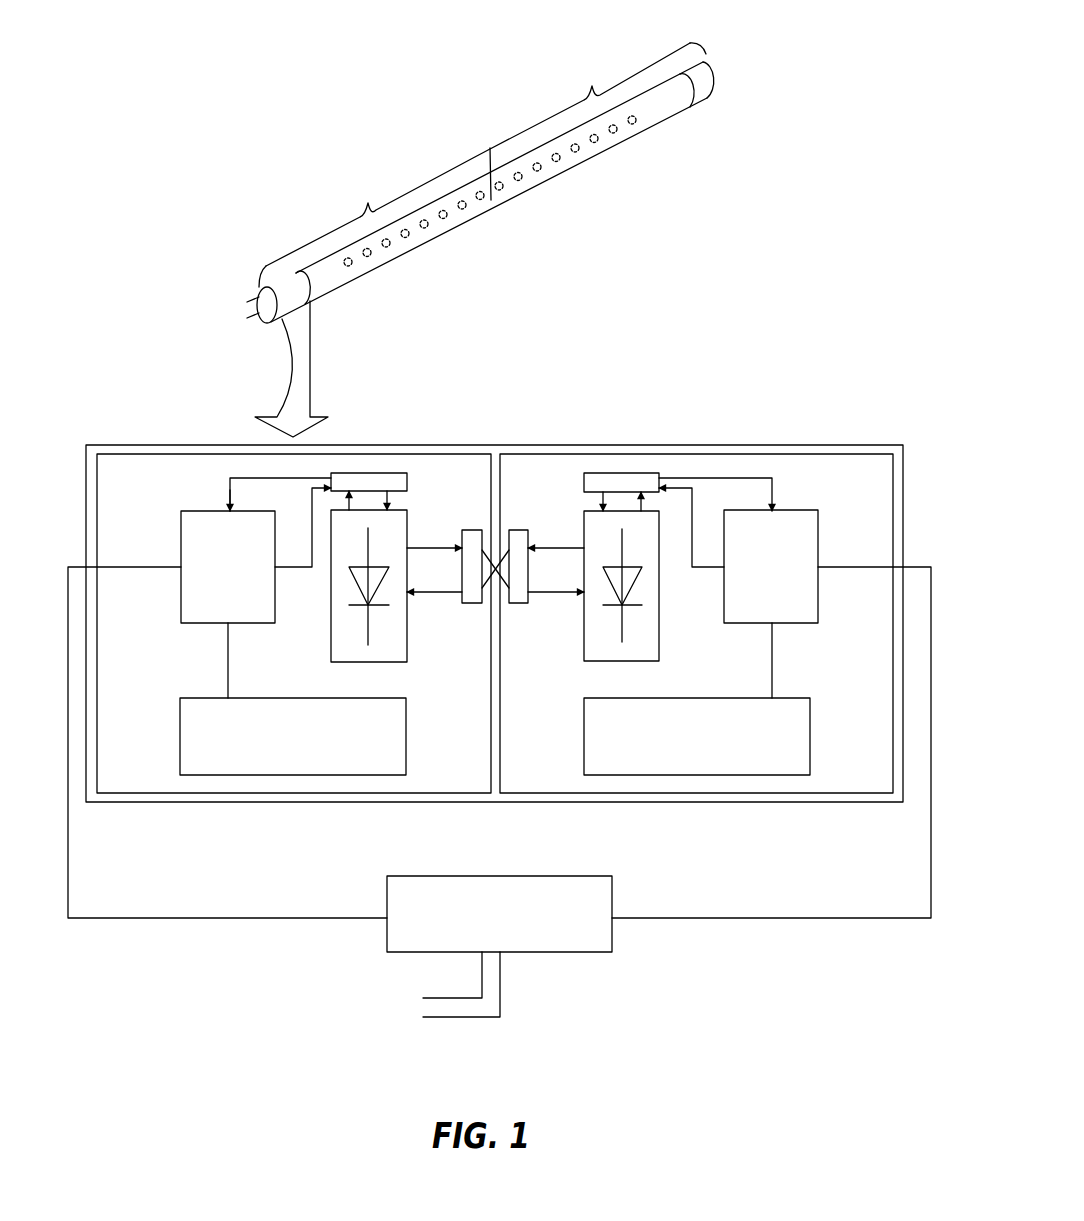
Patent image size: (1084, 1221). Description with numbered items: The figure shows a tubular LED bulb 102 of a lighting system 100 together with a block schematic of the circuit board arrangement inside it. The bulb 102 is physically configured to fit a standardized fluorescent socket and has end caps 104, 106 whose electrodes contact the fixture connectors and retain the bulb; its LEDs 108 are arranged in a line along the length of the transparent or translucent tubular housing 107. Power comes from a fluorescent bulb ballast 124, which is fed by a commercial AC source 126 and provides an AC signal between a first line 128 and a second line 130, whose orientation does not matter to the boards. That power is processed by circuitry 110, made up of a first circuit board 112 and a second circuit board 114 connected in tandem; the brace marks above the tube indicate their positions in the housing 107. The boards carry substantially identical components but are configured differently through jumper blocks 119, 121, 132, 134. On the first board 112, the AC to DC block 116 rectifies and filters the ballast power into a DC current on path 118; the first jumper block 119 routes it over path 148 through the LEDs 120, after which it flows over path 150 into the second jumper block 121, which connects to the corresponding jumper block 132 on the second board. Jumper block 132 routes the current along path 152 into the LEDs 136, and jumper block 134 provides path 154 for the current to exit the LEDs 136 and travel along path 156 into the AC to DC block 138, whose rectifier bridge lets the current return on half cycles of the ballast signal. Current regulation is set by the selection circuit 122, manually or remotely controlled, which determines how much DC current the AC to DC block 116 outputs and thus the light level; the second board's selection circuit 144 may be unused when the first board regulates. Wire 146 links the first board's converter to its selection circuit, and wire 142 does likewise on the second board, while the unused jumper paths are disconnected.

The lighting system 100 is at (298, 20).
The tubular LED bulb 102 is at (428, 246).
The end cap 104 is at (281, 332).
The end cap 106 is at (692, 107).
The tubular housing 107 is at (634, 137).
The LEDs 108 is at (503, 192).
The circuitry 110 is at (557, 445).
The first circuit board 112 is at (342, 452).
The second circuit board 114 is at (727, 453).
The AC to DC block 116 is at (207, 625).
The path 118 is at (297, 568).
The first jumper block 119 is at (407, 482).
The LEDs 120 is at (331, 633).
The second jumper block 121 is at (473, 603).
The selection circuit 122 is at (407, 737).
The ballast 124 is at (613, 895).
The commercial AC source 126 is at (423, 998).
The first line 128 is at (273, 917).
The second line 130 is at (725, 920).
The jumper block 132 is at (518, 603).
The jumper block 134 is at (584, 485).
The LEDs 136 is at (659, 633).
The AC to DC block 138 is at (747, 623).
The wire 142 is at (772, 672).
The selection circuit 144 is at (810, 717).
The wire 146 is at (229, 635).
The path 148 is at (388, 497).
The path 150 is at (428, 551).
The path 152 is at (545, 591).
The path 154 is at (645, 498).
The path 156 is at (750, 478).